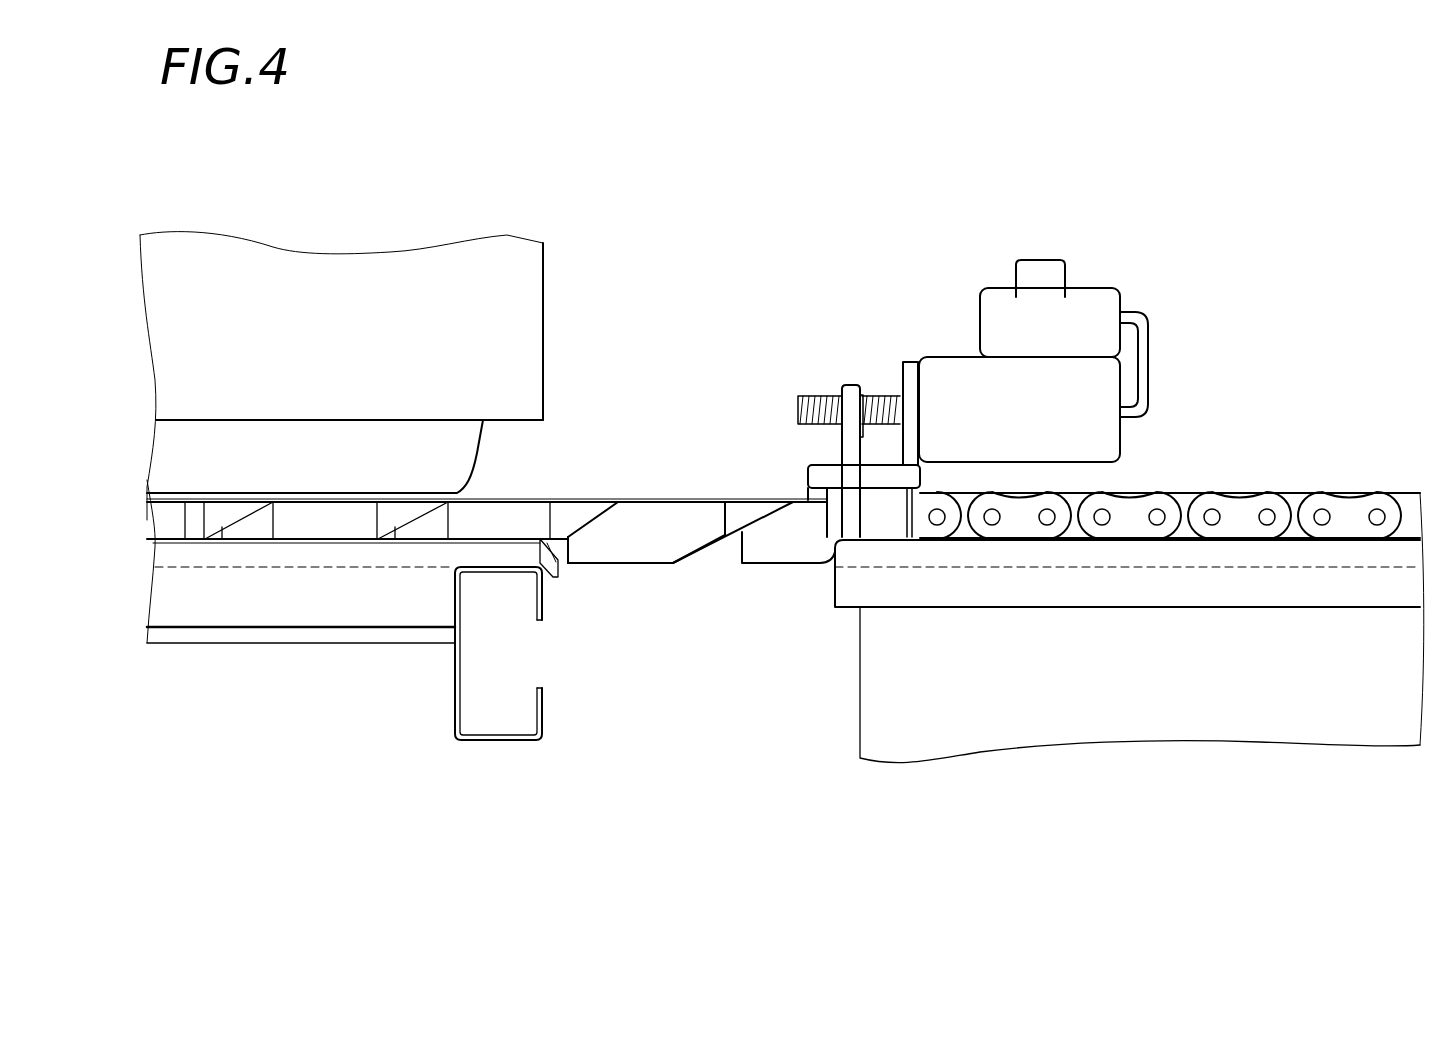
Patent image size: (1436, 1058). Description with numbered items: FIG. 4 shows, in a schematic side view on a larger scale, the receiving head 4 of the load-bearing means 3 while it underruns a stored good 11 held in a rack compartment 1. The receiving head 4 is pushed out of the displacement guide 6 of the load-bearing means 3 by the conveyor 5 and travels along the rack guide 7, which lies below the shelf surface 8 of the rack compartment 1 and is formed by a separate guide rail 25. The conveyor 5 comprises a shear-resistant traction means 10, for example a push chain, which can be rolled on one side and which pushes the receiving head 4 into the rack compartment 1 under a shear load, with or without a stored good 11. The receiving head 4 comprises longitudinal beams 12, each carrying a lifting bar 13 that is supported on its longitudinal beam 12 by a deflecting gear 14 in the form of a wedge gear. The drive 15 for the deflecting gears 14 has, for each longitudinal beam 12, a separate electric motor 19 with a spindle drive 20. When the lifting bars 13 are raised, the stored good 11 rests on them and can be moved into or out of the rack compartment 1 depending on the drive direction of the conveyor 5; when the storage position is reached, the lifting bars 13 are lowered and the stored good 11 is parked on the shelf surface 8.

The rack compartment 1 is at (492, 457).
The load-bearing means 3 is at (912, 682).
The receiving head 4 is at (641, 474).
The conveyor 5 is at (1396, 482).
The displacement guide 6 is at (1342, 567).
The rack guide 7 is at (233, 557).
The shelf surface 8 is at (332, 540).
The traction means 10 is at (1235, 513).
The stored good 11 is at (512, 283).
The longitudinal beam 12 is at (718, 565).
The lifting bar 13 is at (708, 500).
The deflecting gear 14 is at (633, 552).
The drive 15 is at (1163, 352).
The electric motor 19 is at (1023, 457).
The spindle drive 20 is at (818, 390).
The guide rail 25 is at (340, 593).